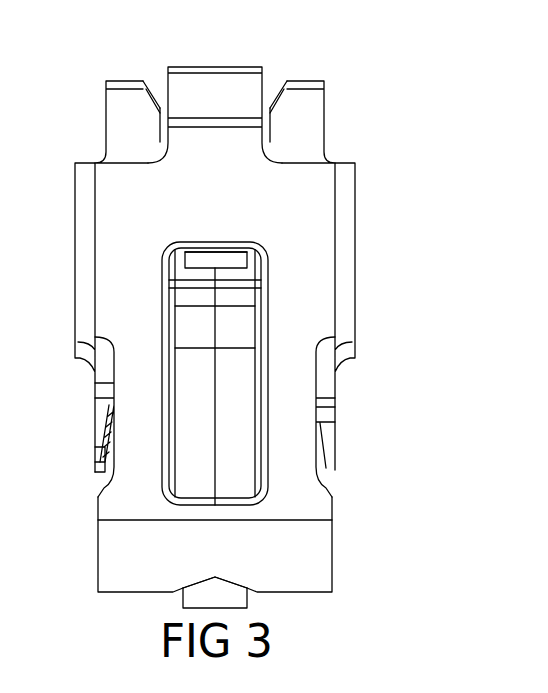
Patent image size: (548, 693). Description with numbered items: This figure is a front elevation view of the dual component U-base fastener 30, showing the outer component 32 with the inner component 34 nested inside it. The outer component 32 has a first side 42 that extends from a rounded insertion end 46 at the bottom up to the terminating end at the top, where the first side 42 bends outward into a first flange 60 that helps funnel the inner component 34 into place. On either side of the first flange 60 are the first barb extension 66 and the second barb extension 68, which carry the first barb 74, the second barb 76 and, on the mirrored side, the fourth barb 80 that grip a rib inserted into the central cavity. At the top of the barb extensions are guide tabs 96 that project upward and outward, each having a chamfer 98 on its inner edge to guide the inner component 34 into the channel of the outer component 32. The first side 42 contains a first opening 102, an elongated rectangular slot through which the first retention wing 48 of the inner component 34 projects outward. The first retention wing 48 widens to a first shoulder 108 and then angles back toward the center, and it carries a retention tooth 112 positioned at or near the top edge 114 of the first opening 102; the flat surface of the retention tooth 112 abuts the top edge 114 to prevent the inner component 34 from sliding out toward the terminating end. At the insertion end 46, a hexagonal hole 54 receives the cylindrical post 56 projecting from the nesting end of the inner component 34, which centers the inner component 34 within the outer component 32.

The dual component U-base fastener 30 is at (390, 68).
The outer component 32 is at (344, 502).
The inner component 34 is at (152, 377).
The first side 42 is at (313, 322).
The insertion end 46 is at (298, 580).
The first retention wing 48 is at (238, 376).
The hole 54 is at (237, 580).
The post 56 is at (197, 597).
The first flange 60 is at (215, 97).
The first barb extension 66 is at (345, 280).
The second barb extension 68 is at (82, 246).
The first barb 74 is at (323, 440).
The second barb 76 is at (97, 422).
The fourth barb 80 is at (95, 450).
The guide tab 96 is at (120, 100).
The chamfer 98 is at (153, 94).
The first opening 102 is at (175, 307).
The first shoulder 108 is at (192, 325).
The retention tooth 112 is at (236, 260).
The top edge 114 is at (215, 249).